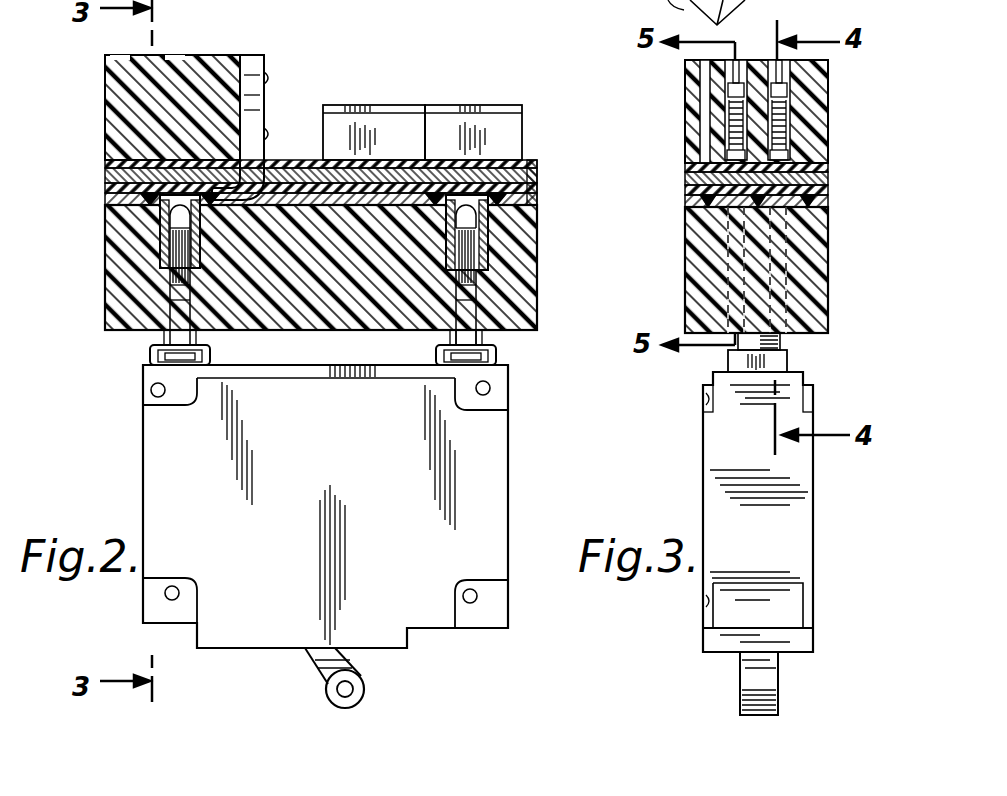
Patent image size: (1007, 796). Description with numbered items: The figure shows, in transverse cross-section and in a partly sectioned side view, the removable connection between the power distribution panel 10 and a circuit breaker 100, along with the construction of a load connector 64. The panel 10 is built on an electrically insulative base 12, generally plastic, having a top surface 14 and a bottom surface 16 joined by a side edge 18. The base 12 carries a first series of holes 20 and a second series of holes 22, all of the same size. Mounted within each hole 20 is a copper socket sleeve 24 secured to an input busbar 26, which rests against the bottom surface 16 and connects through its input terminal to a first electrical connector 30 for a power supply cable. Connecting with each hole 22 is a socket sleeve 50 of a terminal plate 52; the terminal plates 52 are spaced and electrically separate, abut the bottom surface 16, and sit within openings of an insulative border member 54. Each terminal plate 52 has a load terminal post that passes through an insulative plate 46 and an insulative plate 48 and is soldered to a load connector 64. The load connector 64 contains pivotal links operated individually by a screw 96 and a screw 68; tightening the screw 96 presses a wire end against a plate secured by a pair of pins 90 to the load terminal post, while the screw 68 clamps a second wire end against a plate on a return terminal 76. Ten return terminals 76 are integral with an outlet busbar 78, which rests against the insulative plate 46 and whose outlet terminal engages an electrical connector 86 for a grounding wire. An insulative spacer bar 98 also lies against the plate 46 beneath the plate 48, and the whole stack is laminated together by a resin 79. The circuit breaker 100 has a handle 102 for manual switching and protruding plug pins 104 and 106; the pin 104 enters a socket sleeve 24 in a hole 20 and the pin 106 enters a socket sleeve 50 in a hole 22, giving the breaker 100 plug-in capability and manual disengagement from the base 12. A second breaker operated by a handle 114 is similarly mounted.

In FIG. 2, the power distribution panel 10 is at (546, 262).
In FIG. 2, the electrically insulative base 12 is at (342, 318).
In FIG. 3, the electrically insulative base 12 is at (816, 280).
In FIG. 2, the top surface 14 is at (500, 336).
In FIG. 3, the top surface 14 is at (818, 335).
In FIG. 2, the bottom surface 16 is at (108, 204).
In FIG. 3, the bottom surface 16 is at (830, 204).
In FIG. 2, the side edge 18 is at (106, 288).
In FIG. 3, the side edge 18 is at (575, 3).
In FIG. 2, the first series of holes 20 is at (502, 300).
In FIG. 2, the second series of holes 22 is at (152, 346).
In FIG. 2, the socket sleeve 24 is at (496, 248).
In FIG. 2, the input busbar 26 is at (372, 140).
In FIG. 2, the first electrical connector 30 is at (496, 108).
In FIG. 3, the first electrical connector 30 is at (686, 2).
In FIG. 2, the insulative plate 46 is at (540, 184).
In FIG. 2, the insulative plate 48 is at (540, 161).
In FIG. 2, the socket sleeve 50 is at (276, 185).
In FIG. 2, the terminal plate 52 is at (112, 235).
In FIG. 3, the terminal plate 52 is at (830, 178).
In FIG. 2, the insulative border member 54 is at (130, 130).
In FIG. 2, the load connector 64 is at (198, 64).
In FIG. 3, the load connector 64 is at (814, 120).
In FIG. 3, the screw 68 is at (792, 95).
In FIG. 2, the return terminal 76 is at (262, 58).
In FIG. 2, the outlet busbar 78 is at (426, 158).
In FIG. 2, the resin 79 is at (542, 177).
In FIG. 2, the electrical connector 86 is at (402, 106).
In FIG. 2, the pins 90 is at (272, 122).
In FIG. 3, the screw 96 is at (724, 92).
In FIG. 2, the insulative spacer bar 98 is at (112, 172).
In FIG. 3, the insulative spacer bar 98 is at (688, 168).
In FIG. 2, the circuit breaker 100 is at (510, 470).
In FIG. 3, the circuit breaker 100 is at (814, 497).
In FIG. 2, the handle 102 is at (366, 690).
In FIG. 3, the handle 102 is at (780, 694).
In FIG. 2, the pin 104 is at (472, 280).
In FIG. 2, the pin 106 is at (166, 305).
In FIG. 3, the handle 114 is at (612, 0).